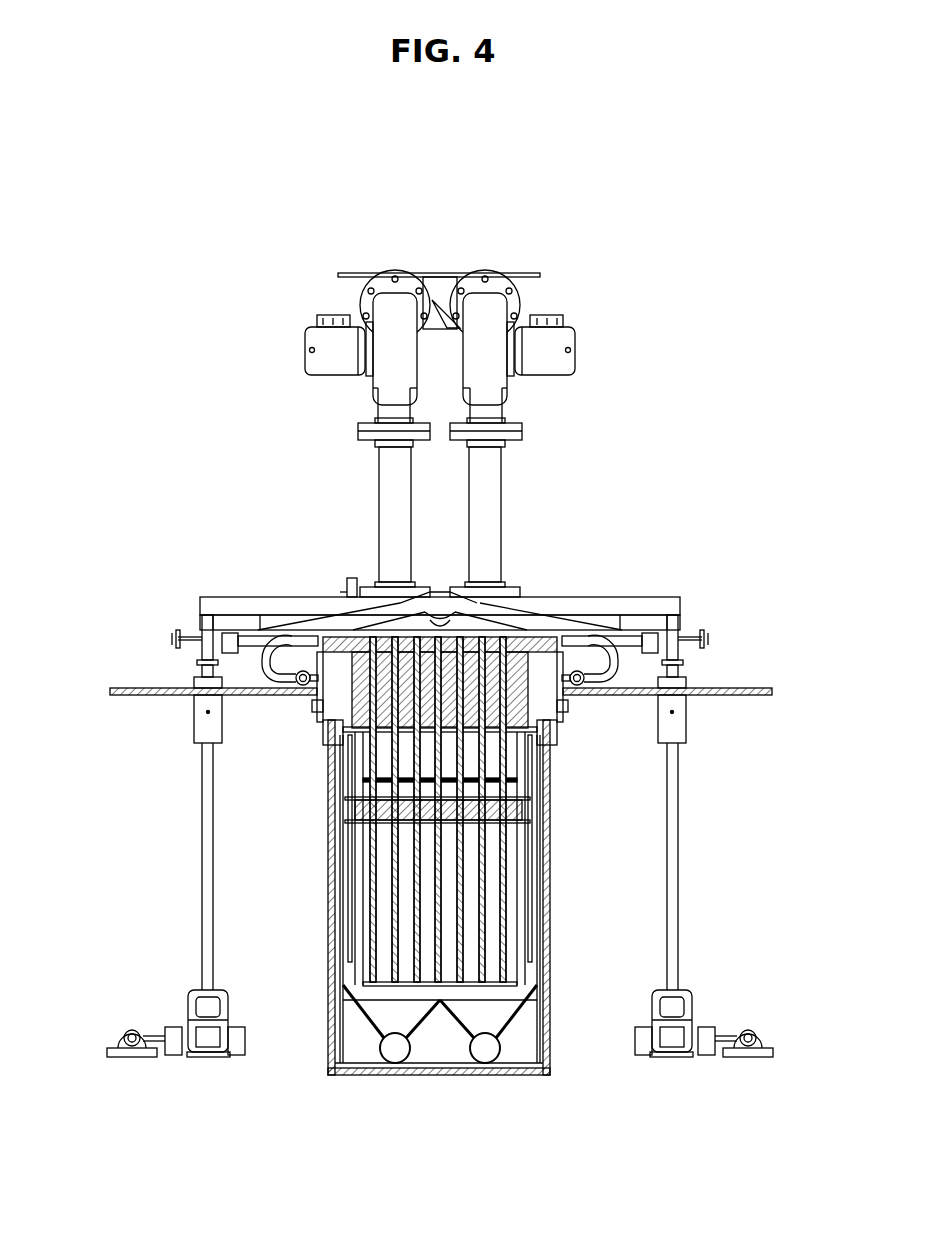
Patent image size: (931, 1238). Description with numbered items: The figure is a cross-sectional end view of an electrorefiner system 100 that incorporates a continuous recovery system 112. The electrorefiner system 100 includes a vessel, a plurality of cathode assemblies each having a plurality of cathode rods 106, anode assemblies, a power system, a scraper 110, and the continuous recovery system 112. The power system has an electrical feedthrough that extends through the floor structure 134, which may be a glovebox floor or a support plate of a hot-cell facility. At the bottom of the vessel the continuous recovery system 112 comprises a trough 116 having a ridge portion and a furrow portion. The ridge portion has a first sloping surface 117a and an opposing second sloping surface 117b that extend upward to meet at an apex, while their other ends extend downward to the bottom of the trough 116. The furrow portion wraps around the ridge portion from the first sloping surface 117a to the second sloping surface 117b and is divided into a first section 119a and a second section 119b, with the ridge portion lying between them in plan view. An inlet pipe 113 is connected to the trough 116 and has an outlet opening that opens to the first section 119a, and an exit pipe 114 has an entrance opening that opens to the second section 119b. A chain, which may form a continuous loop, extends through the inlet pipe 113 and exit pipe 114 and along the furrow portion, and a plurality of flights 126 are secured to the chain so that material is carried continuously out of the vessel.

The electrorefiner system 100 is at (469, 175).
The continuous recovery system 112 is at (297, 358).
The inlet pipe 113 is at (478, 503).
The exit pipe 114 is at (390, 503).
The floor structure 134 is at (772, 688).
The scraper 110 is at (513, 815).
The cathode rods 106 is at (505, 885).
The trough 116 is at (500, 1020).
The first sloping surface 117a is at (462, 1025).
The second sloping surface 117b is at (425, 1025).
The first section of the furrow portion 119a is at (498, 1012).
The second section of the furrow portion 119b is at (388, 1015).
The flights 126 is at (478, 1052).